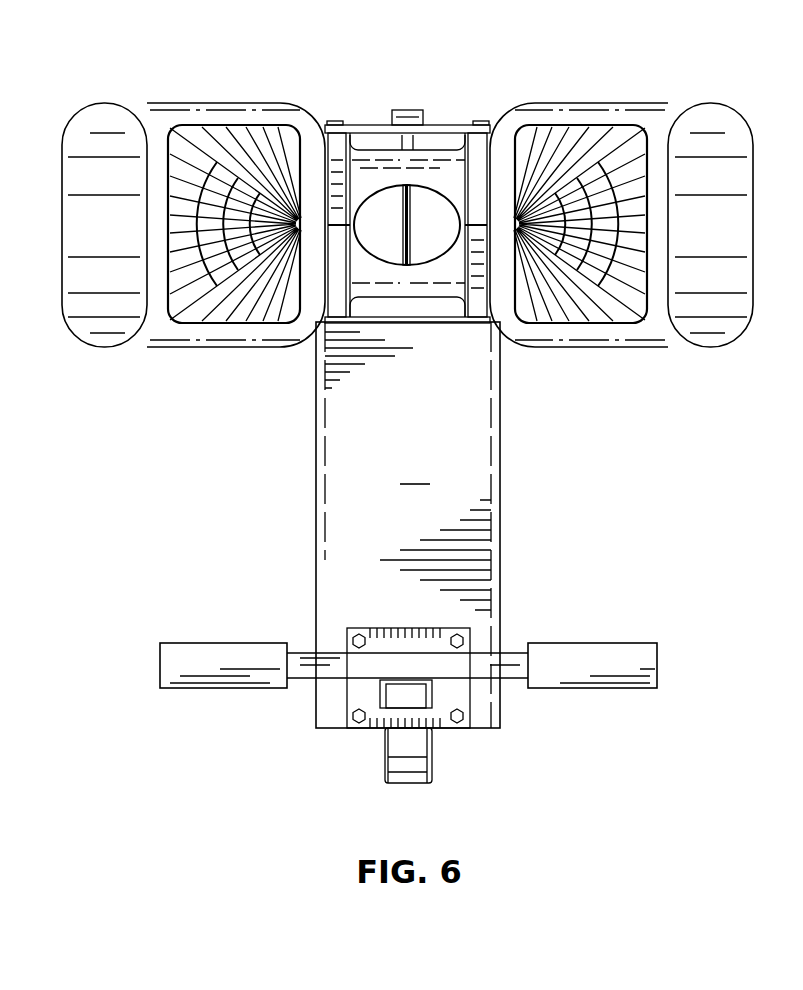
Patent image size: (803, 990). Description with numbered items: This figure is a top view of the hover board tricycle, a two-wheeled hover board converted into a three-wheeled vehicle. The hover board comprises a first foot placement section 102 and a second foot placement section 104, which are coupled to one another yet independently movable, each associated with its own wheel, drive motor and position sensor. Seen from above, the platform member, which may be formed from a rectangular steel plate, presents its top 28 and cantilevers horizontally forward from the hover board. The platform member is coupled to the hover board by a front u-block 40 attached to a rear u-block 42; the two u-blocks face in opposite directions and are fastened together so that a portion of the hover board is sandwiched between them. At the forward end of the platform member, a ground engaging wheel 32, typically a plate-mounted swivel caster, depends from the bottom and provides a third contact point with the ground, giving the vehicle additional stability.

The first foot placement section 102 is at (255, 160).
The second foot placement section 104 is at (593, 145).
The rear u-block 42 is at (452, 155).
The front u-block 40 is at (481, 318).
The top 28 is at (408, 525).
The ground engaging wheel 32 is at (405, 785).